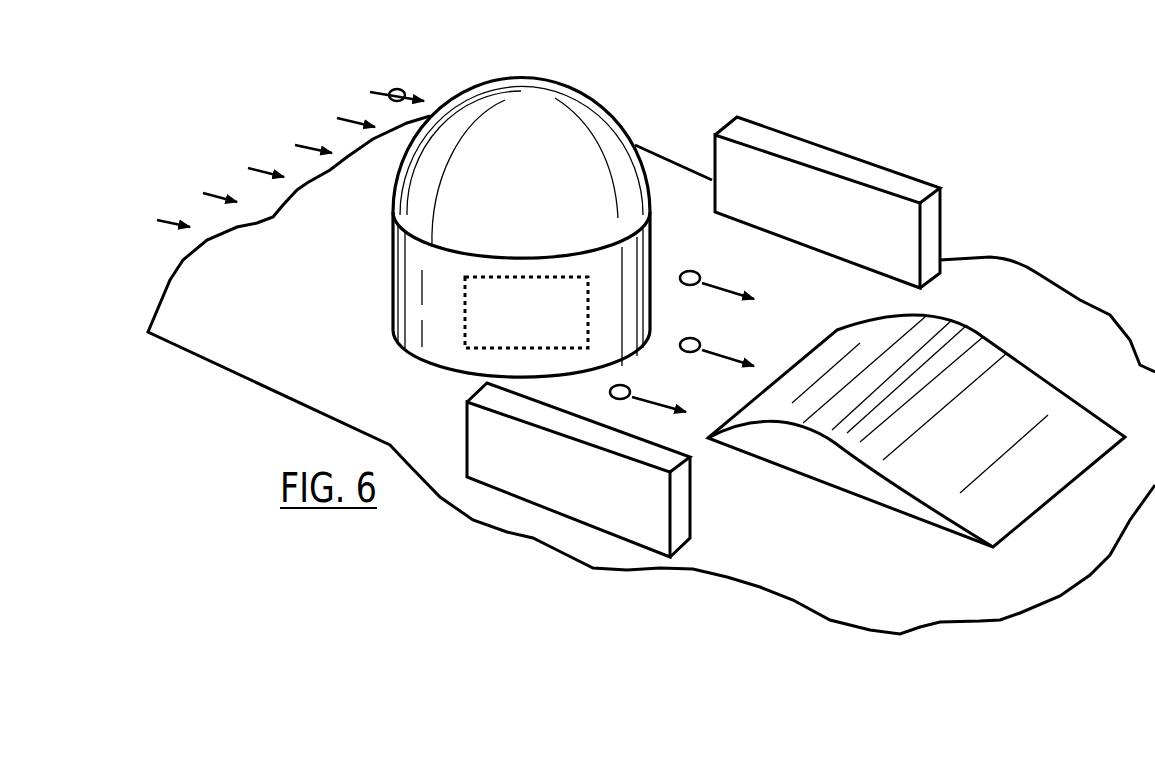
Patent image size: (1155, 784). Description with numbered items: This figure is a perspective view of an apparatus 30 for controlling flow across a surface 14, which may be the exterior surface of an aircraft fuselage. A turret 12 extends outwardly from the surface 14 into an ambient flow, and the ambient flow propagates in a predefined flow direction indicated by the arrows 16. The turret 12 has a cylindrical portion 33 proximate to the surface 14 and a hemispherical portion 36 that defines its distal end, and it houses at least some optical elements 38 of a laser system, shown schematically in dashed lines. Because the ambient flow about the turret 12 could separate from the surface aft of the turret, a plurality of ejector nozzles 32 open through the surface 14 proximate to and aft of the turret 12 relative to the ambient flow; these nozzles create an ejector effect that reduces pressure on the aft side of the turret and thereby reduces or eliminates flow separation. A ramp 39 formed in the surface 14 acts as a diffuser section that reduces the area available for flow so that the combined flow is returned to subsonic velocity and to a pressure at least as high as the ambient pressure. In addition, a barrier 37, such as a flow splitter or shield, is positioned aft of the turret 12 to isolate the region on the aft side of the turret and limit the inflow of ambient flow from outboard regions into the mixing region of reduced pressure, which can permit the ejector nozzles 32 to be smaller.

The turret 12 is at (642, 268).
The surface 14 is at (1037, 273).
The predefined flow direction 16 is at (397, 88).
The apparatus 30 is at (682, 96).
The ejector nozzles 32 is at (697, 271).
The cylindrical portion 33 is at (393, 291).
The hemispherical portion 36 is at (422, 183).
The barrier 37 is at (872, 175).
The optical elements 38 is at (503, 277).
The ramp 39 is at (835, 348).